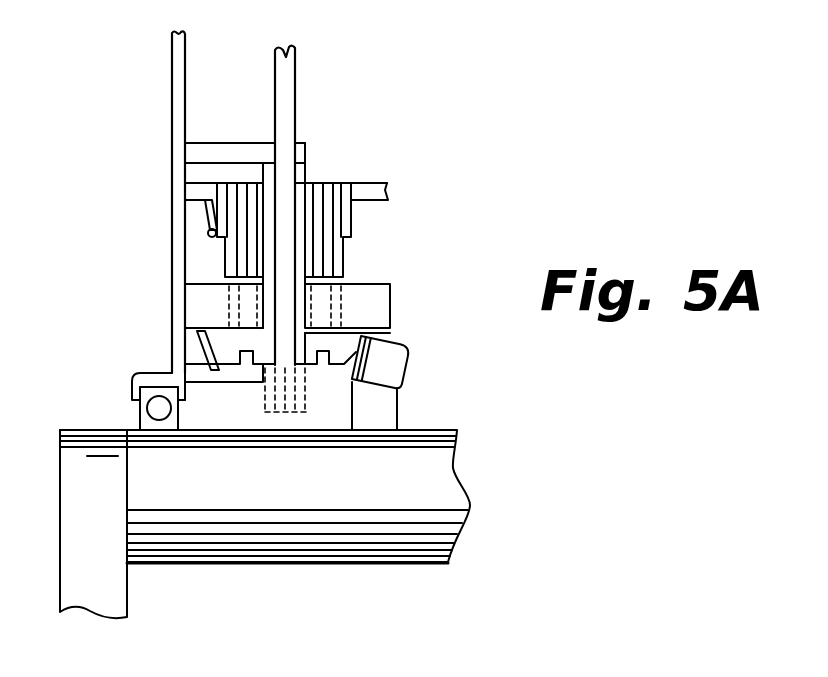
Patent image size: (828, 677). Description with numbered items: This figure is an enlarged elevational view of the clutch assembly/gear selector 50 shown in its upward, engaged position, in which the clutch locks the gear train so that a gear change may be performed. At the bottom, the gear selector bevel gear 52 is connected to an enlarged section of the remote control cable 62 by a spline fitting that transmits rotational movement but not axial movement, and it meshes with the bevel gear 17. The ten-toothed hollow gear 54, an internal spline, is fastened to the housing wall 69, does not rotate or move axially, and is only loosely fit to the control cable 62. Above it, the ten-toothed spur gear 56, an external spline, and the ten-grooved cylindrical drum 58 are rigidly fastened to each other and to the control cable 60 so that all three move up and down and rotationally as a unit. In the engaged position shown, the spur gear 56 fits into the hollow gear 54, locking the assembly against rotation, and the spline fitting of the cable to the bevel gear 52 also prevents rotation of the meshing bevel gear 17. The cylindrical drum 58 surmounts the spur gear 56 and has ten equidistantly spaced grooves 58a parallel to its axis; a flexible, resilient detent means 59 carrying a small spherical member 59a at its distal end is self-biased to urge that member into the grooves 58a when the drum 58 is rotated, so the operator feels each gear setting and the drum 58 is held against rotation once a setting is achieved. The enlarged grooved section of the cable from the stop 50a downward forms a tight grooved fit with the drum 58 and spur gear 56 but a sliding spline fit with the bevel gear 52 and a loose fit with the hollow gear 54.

The clutch assembly/gear selector 50 is at (443, 113).
The stop 50a is at (192, 153).
The gear selector bevel gear 52 is at (228, 343).
The hollow gear 54 is at (385, 297).
The spur gear 56 is at (345, 252).
The cylindrical drum 58 is at (351, 214).
The grooves 58a is at (338, 201).
The detent means 59 is at (207, 217).
The spherical member 59a is at (208, 236).
The control cable 60 is at (296, 104).
The remote control cable 62 is at (305, 172).
The housing wall 69 is at (180, 330).
The bevel gear 17 is at (405, 358).